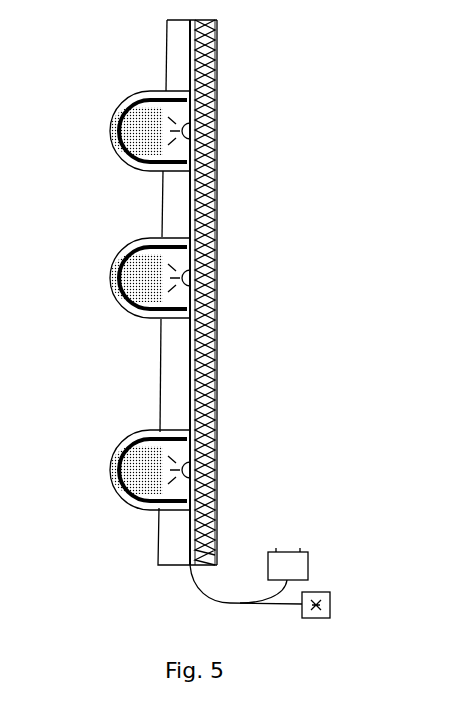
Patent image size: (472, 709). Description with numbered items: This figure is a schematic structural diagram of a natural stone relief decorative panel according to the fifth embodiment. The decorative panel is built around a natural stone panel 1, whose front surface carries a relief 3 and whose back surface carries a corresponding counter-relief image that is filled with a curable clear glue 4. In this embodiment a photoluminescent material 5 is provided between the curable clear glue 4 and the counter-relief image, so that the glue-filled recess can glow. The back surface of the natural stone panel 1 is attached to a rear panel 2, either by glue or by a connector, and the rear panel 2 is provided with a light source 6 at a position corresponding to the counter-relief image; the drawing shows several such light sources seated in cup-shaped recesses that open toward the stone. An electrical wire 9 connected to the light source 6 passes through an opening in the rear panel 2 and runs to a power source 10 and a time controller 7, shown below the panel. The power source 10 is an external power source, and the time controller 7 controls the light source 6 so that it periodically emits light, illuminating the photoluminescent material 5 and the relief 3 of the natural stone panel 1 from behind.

The natural stone panel 1 is at (181, 62).
The rear panel 2 is at (220, 64).
The relief 3 is at (118, 150).
The curable clear glue 4 is at (126, 498).
The photoluminescent material 5 is at (124, 163).
The light source 6 is at (184, 147).
The time controller 7 is at (320, 590).
The electrical wire 9 is at (230, 598).
The power source 10 is at (293, 546).